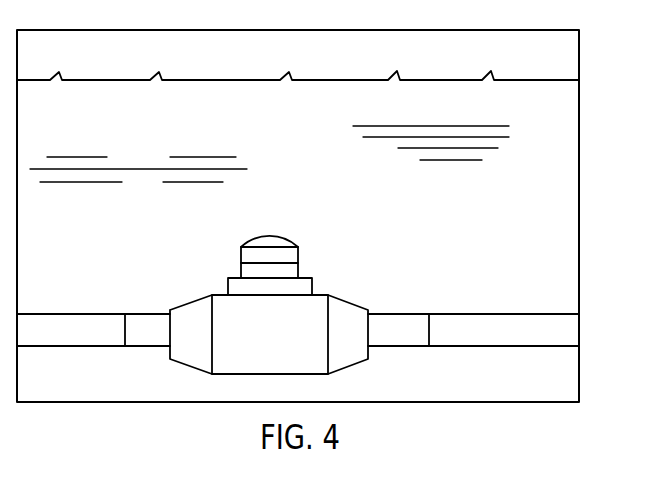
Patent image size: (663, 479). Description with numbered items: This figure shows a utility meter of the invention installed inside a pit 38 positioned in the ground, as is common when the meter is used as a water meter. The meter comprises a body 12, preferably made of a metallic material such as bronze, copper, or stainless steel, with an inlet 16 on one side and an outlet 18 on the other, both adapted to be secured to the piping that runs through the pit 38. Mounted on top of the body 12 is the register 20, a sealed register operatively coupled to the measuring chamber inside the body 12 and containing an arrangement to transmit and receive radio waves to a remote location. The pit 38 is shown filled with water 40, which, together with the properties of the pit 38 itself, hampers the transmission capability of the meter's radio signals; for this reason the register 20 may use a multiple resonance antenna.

The body 12 is at (350, 365).
The inlet 16 is at (152, 323).
The outlet 18 is at (398, 322).
The register 20 is at (298, 268).
The pit 38 is at (580, 101).
The water 40 is at (558, 184).